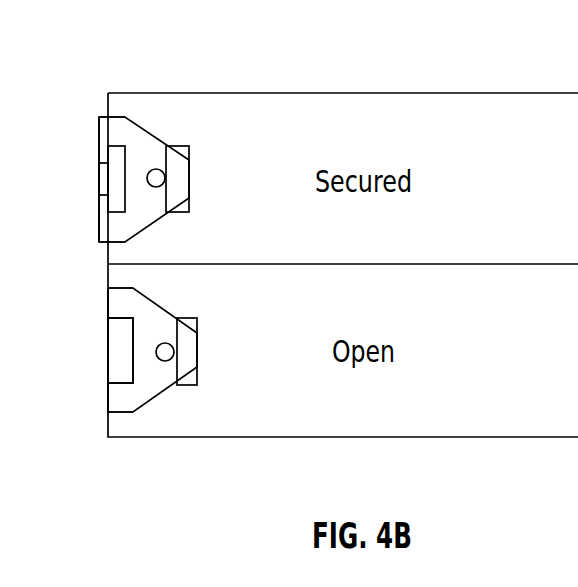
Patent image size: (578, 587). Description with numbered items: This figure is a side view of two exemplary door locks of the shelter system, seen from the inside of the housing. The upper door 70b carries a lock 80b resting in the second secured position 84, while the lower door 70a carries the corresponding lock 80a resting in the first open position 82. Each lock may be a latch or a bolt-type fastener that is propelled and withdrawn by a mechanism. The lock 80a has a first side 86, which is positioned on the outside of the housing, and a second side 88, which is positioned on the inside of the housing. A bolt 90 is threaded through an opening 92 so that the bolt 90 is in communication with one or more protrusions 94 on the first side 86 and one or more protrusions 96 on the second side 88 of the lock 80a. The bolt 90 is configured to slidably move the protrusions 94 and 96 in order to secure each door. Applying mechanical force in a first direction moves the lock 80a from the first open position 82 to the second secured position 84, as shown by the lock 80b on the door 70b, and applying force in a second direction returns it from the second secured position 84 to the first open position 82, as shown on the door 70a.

The door 70a is at (383, 418).
The door 70b is at (340, 108).
The lock 80a is at (166, 404).
The lock 80b is at (148, 125).
The first open position 82 is at (98, 348).
The second secured position 84 is at (88, 145).
The first side 86 is at (88, 235).
The second side 88 is at (203, 194).
The bolt 90 is at (157, 178).
The opening 92 is at (116, 356).
The protrusions 94 is at (107, 180).
The protrusions 96 is at (107, 126).